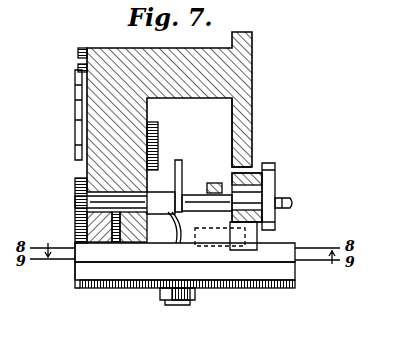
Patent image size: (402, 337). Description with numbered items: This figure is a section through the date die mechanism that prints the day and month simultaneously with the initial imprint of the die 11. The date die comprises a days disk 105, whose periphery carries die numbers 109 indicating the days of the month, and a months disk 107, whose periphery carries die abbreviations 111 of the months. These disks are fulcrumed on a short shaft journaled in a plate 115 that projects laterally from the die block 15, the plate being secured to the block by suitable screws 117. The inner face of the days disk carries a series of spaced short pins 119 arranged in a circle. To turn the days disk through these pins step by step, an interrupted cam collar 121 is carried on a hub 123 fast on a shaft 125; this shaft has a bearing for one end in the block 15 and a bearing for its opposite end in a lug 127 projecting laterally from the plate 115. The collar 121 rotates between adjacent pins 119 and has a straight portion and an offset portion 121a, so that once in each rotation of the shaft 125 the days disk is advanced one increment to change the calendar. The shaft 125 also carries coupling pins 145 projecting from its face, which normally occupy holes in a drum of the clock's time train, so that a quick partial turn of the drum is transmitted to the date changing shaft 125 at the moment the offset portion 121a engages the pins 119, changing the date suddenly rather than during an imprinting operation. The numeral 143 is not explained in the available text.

The die block 15 is at (112, 52).
The die 11 is at (80, 75).
The screws 117 is at (88, 222).
The hub 123 is at (160, 192).
The interrupted cam collar 121 is at (178, 200).
The shaft 125 is at (188, 196).
The lug 127 is at (254, 150).
The gear 143 is at (272, 176).
The coupling pins 145 is at (286, 203).
The plate 115 is at (258, 240).
The days disk 105 is at (280, 256).
The months disk 107 is at (278, 274).
The die abbreviations 111 is at (268, 278).
The die numbers 109 is at (82, 283).
The offset portion 121a is at (168, 214).
The short pins 119 is at (198, 286).